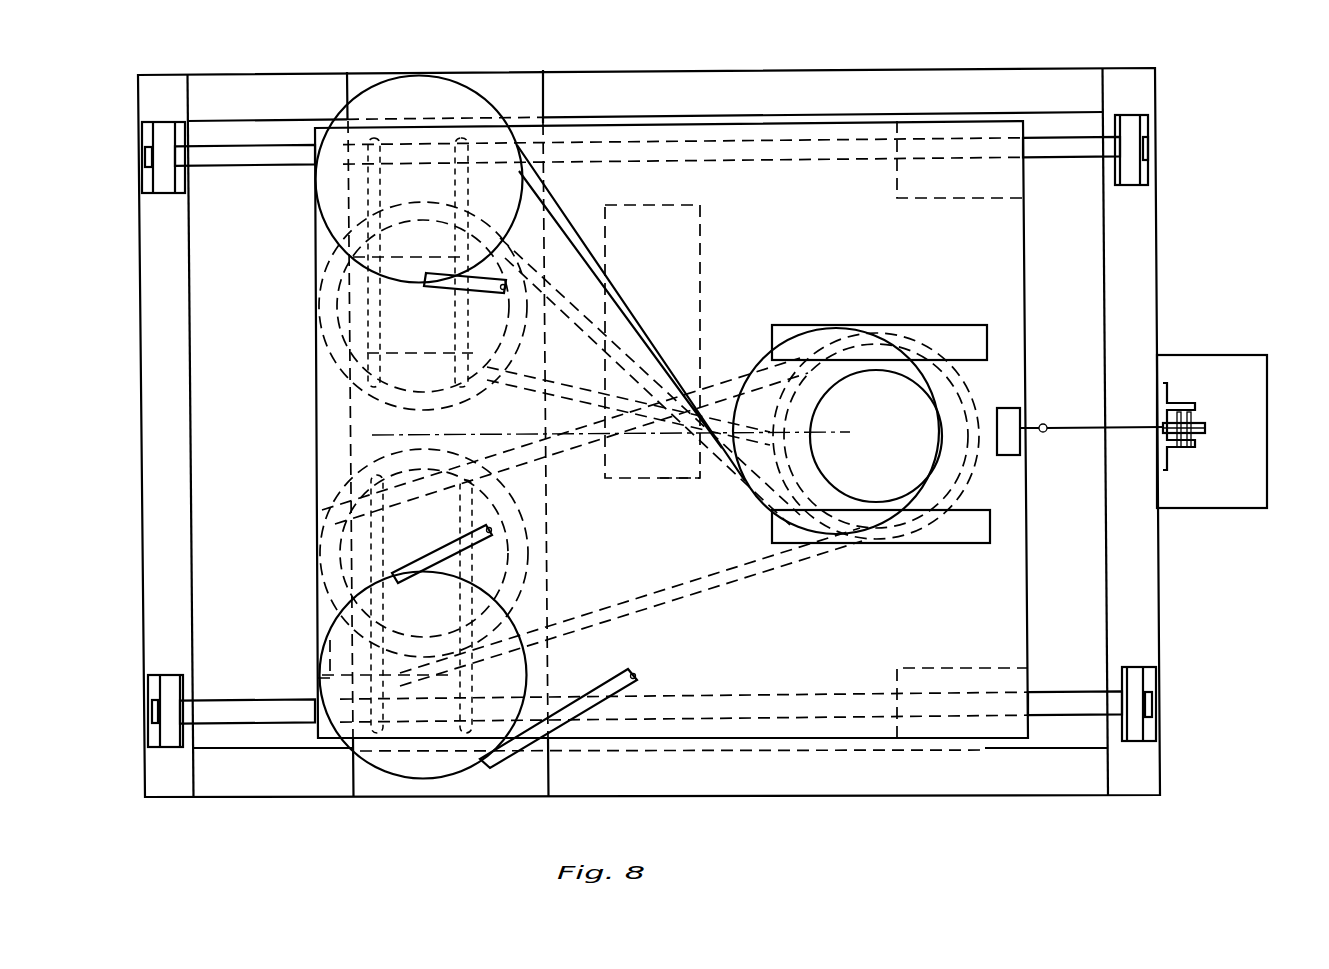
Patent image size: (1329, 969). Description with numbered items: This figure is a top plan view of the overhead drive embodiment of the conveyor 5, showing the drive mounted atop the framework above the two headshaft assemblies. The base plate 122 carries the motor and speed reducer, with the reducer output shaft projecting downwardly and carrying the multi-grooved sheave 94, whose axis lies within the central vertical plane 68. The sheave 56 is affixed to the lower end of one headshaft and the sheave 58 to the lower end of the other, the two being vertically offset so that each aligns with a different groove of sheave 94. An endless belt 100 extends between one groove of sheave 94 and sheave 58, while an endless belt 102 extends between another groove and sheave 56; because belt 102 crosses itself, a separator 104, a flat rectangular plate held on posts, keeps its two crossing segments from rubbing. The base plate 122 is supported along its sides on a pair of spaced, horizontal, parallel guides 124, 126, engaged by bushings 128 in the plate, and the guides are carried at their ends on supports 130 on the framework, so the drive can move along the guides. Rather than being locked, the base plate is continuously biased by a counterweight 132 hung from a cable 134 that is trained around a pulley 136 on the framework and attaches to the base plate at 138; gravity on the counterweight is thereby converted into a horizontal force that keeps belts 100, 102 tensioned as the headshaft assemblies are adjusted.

The apparatus frame 5 is at (1042, 739).
The sheave 56 is at (323, 240).
The sheave 58 is at (322, 512).
The central vertical plane 68 is at (690, 458).
The multi-grooved sheave 94 is at (852, 330).
The endless belt 100 is at (598, 618).
The endless belt 102 is at (557, 275).
The separator 104 is at (702, 255).
The base plate 122 is at (313, 390).
The guide 124 is at (282, 155).
The guide 126 is at (255, 712).
The bushing 128 is at (967, 203).
The support 130 is at (162, 177).
The counterweight 132 is at (1220, 490).
The cable 134 is at (1072, 428).
The pulley 136 is at (1207, 422).
The attachment point 138 is at (1030, 448).